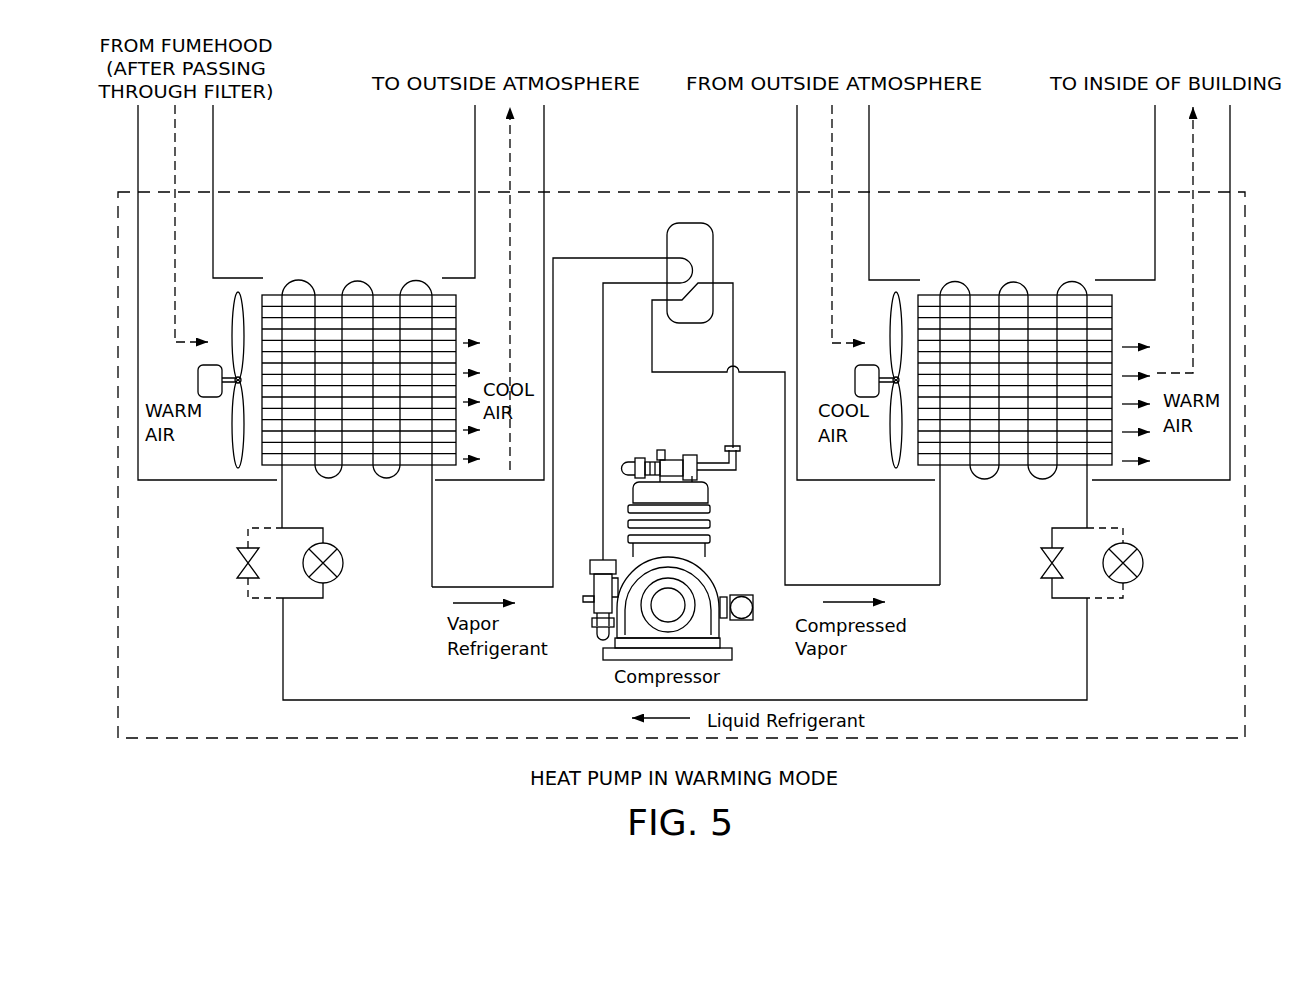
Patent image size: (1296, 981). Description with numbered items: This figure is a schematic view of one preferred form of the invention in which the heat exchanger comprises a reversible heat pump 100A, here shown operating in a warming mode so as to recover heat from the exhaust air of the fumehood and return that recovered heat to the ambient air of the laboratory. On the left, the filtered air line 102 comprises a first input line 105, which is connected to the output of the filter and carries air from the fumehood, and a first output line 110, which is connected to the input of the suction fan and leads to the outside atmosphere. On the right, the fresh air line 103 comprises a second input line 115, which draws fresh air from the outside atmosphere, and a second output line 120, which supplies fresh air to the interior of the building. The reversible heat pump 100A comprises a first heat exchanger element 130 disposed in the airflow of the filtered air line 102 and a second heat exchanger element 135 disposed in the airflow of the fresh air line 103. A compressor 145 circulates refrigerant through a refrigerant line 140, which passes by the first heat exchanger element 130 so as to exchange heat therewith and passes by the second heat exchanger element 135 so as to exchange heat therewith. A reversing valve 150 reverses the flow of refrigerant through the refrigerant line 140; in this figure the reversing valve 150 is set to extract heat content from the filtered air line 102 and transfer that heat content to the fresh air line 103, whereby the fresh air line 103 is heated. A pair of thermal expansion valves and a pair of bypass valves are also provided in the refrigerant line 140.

The reversible heat pump 100A is at (235, 742).
The filtered air line 102 is at (218, 256).
The fresh air line 103 is at (874, 258).
The first input line 105 is at (218, 147).
The first output line 110 is at (550, 147).
The second input line 115 is at (874, 150).
The second output line 120 is at (1150, 152).
The first heat exchanger element 130 is at (368, 279).
The second heat exchanger element 135 is at (1024, 279).
The refrigerant line 140 is at (437, 694).
The compressor 145 is at (591, 642).
The reversing valve 150 is at (718, 246).